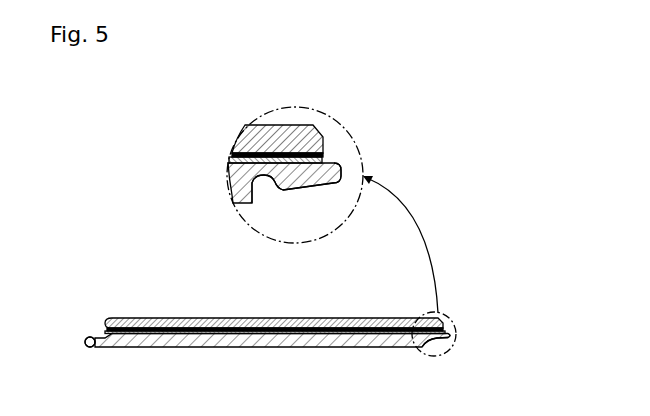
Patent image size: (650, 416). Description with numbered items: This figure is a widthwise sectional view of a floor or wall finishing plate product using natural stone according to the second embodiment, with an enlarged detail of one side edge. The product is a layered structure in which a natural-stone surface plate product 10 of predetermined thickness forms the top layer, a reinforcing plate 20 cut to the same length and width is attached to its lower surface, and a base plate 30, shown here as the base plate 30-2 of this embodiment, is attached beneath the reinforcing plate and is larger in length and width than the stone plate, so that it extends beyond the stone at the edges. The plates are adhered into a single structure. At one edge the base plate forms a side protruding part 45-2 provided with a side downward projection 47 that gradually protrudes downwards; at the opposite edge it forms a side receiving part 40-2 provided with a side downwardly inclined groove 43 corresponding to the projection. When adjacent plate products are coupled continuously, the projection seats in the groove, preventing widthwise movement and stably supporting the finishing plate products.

The natural-stone surface plate product 10 is at (285, 116).
The reinforcing plate 20 is at (333, 153).
The side receiving part 40-2 is at (101, 327).
The base plate 30 is at (243, 211).
The base plate 30-2 is at (229, 355).
The side downwardly inclined groove 43 is at (88, 337).
The side protruding part 45-2 is at (341, 169).
The side downward projection 47 is at (283, 190).